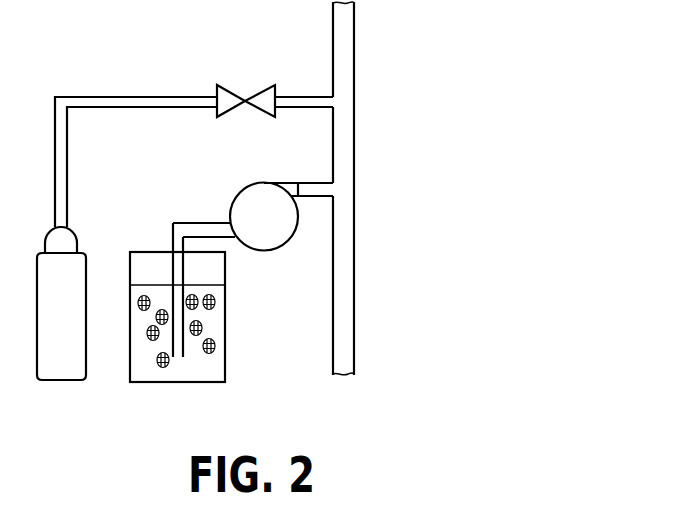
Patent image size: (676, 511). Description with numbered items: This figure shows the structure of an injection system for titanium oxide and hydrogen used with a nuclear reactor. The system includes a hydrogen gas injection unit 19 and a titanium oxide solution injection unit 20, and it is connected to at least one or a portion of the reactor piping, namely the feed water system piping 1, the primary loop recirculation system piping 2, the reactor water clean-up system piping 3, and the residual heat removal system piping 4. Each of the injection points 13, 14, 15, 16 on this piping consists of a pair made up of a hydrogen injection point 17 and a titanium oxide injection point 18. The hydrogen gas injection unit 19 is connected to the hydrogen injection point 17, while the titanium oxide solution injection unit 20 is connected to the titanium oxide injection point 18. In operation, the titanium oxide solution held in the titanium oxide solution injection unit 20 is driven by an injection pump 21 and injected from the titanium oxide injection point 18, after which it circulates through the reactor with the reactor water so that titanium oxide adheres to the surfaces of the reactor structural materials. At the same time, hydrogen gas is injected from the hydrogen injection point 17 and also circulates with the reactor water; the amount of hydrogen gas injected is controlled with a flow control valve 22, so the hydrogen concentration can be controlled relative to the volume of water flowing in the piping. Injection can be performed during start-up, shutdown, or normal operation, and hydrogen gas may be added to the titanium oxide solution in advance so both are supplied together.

The feed water system piping 1 is at (409, 188).
The primary loop recirculation (PLR) system piping 2 is at (409, 188).
The reactor water clean-up (WCU) system piping 3 is at (409, 188).
The residual heat removal (RHR) system piping 4 is at (354, 40).
The injection point 13 is at (321, 162).
The injection point 14 is at (321, 162).
The injection point 15 is at (321, 162).
The injection point 16 is at (321, 162).
The hydrogen injection point 17 is at (333, 100).
The titanium oxide injection point 18 is at (336, 178).
The hydrogen gas injection unit 19 is at (62, 381).
The titanium oxide solution injection unit 20 is at (177, 383).
The injection pump 21 is at (254, 183).
The flow control valve 22 is at (245, 100).